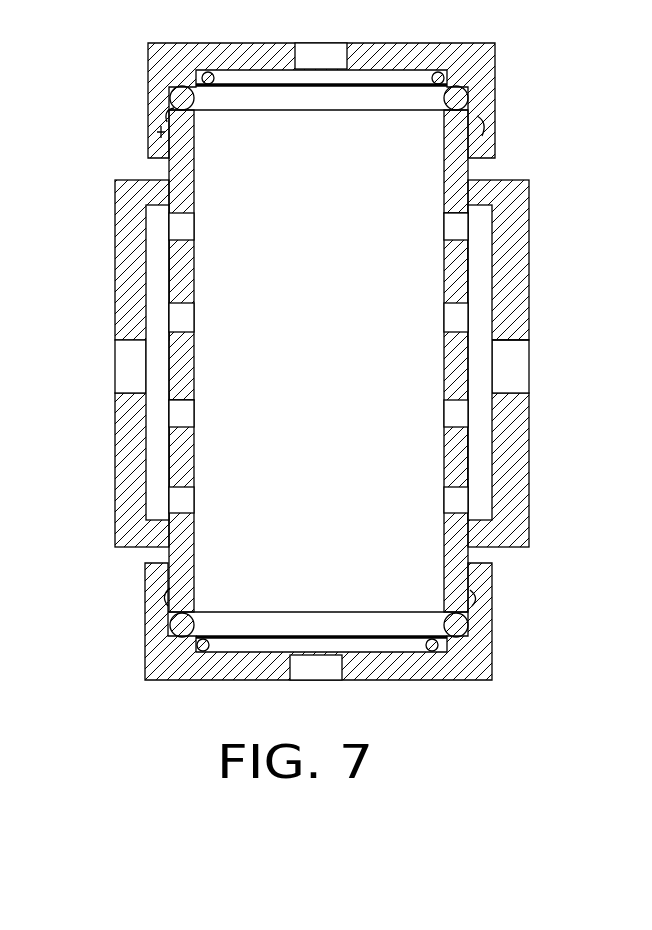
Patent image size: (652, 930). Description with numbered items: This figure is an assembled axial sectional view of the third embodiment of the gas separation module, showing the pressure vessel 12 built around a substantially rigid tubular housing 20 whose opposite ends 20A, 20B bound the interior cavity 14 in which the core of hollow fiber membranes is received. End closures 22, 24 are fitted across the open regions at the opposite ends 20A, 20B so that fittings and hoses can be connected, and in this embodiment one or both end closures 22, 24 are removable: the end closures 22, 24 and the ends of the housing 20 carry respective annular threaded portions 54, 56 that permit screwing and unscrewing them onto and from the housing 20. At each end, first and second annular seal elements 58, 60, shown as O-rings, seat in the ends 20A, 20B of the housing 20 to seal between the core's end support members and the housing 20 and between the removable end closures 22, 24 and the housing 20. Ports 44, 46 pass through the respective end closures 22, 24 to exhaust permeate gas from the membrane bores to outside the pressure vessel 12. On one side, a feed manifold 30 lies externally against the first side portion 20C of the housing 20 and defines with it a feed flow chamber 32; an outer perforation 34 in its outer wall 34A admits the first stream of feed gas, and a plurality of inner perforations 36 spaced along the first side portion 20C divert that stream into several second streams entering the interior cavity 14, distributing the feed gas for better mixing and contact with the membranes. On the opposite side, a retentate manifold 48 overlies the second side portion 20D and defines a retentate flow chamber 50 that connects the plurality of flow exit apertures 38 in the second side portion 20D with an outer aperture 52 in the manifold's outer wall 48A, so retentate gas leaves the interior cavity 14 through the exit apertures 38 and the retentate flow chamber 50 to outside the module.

The pressure vessel 12 is at (320, 364).
The interior cavity 14 is at (413, 586).
The tubular housing 20 is at (314, 361).
The housing end 20A is at (452, 125).
The housing end 20B is at (187, 580).
The first side portion 20C is at (160, 360).
The second side portion 20D is at (472, 380).
The end closure 22 is at (321, 80).
The end closure 24 is at (318, 644).
The feed manifold 30 is at (98, 363).
The feed flow chamber 32 is at (164, 276).
The outer perforation 34 is at (115, 380).
The outer wall 34A is at (115, 235).
The inner perforations 36 is at (197, 228).
The flow exit apertures 38 is at (444, 228).
The port 44 is at (313, 44).
The port 46 is at (292, 680).
The retentate manifold 48 is at (540, 360).
The outer wall 48A is at (529, 470).
The retentate flow chamber 50 is at (484, 268).
The outer aperture 52 is at (518, 342).
The annular threaded portion 54 is at (495, 132).
The annular threaded portion 56 is at (162, 132).
The first annular seal element 58 is at (222, 112).
The second annular seal element 60 is at (368, 86).